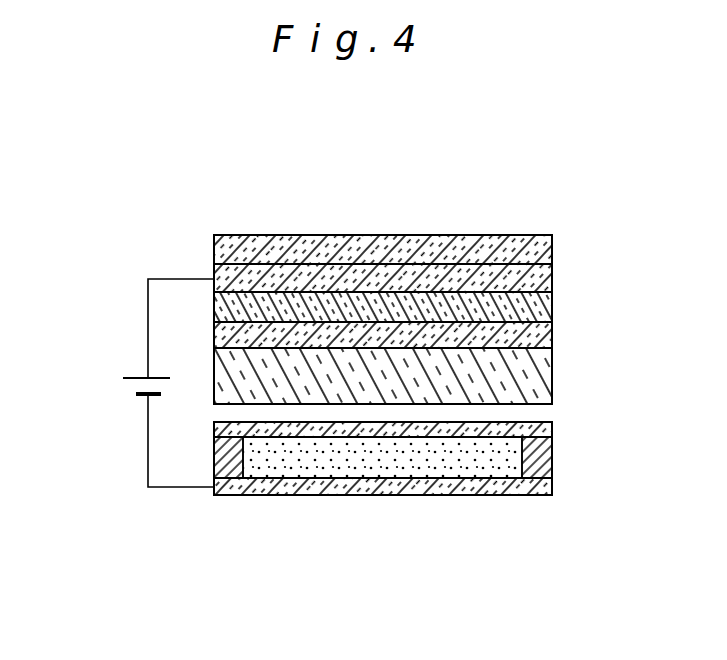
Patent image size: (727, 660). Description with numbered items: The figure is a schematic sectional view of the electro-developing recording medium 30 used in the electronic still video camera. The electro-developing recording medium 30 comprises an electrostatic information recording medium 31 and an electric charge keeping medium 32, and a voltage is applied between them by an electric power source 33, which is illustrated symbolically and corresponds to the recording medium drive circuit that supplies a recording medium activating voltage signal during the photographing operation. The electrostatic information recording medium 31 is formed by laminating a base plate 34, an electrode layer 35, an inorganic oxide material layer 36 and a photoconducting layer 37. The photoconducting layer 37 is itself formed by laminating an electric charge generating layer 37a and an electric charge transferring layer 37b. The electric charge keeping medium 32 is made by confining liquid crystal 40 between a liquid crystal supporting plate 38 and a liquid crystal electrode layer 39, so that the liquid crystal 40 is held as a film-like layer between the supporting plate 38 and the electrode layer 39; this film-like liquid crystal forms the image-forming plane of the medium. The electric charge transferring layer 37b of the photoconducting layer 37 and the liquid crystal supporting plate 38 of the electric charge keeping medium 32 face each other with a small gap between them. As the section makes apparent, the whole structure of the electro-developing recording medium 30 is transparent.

The electro-developing recording medium 30 is at (138, 515).
The electrostatic information recording medium 31 is at (402, 297).
The electric charge keeping medium 32 is at (368, 513).
The electric power source 33 is at (140, 398).
The base plate 34 is at (494, 246).
The electrode layer 35 is at (357, 272).
The inorganic oxide material layer 36 is at (530, 290).
The photoconducting layer 37 is at (402, 297).
The electric charge generating layer 37a is at (535, 320).
The electric charge transferring layer 37b is at (552, 404).
The liquid crystal supporting plate 38 is at (335, 432).
The liquid crystal electrode layer 39 is at (497, 483).
The liquid crystal 40 is at (432, 470).